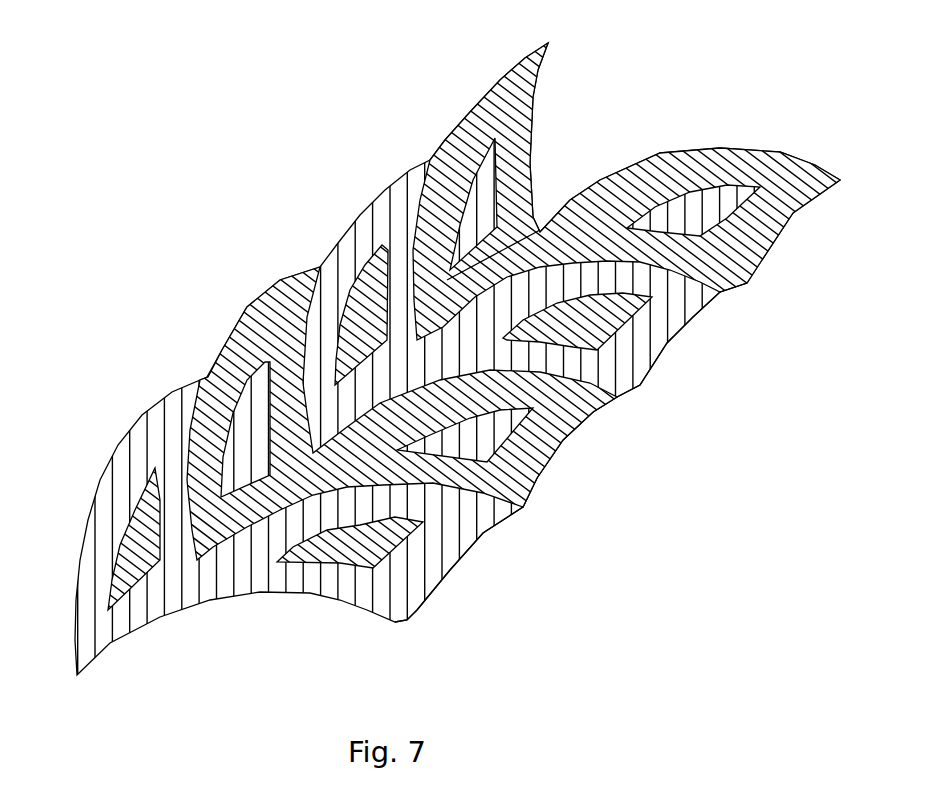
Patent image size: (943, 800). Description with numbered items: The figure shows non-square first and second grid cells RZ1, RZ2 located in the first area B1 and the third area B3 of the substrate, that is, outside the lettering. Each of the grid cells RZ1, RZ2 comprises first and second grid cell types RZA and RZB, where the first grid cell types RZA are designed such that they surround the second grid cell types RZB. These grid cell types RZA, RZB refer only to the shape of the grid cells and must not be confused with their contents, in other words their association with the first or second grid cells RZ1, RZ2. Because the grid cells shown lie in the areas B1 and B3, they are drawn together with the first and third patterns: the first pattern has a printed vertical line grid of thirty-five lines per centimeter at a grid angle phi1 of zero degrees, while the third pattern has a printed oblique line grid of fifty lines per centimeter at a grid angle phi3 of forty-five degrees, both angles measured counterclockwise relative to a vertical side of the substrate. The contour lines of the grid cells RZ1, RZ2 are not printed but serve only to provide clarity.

The first area B1 is at (318, 133).
The third area B3 is at (458, 400).
The first grid cell RZ1 is at (471, 400).
The second grid cell RZ2 is at (471, 400).
The first grid cell type RZA is at (471, 400).
The second grid cell type RZB is at (471, 400).
The grid angle phi1 is at (728, 498).
The grid angle phi3 is at (713, 592).